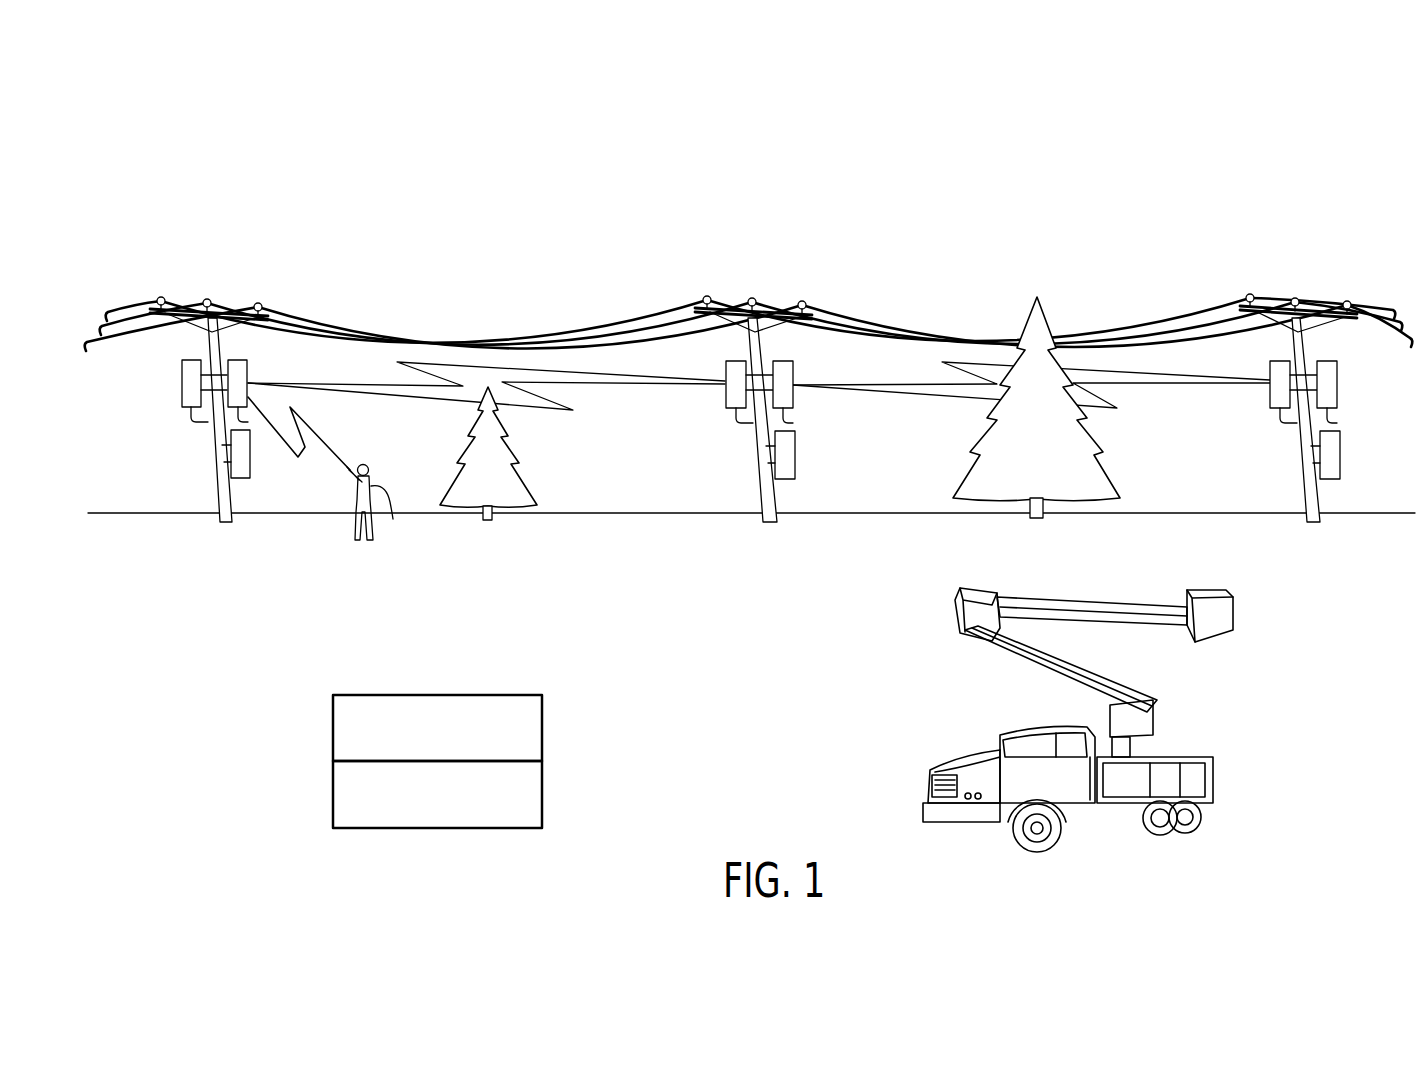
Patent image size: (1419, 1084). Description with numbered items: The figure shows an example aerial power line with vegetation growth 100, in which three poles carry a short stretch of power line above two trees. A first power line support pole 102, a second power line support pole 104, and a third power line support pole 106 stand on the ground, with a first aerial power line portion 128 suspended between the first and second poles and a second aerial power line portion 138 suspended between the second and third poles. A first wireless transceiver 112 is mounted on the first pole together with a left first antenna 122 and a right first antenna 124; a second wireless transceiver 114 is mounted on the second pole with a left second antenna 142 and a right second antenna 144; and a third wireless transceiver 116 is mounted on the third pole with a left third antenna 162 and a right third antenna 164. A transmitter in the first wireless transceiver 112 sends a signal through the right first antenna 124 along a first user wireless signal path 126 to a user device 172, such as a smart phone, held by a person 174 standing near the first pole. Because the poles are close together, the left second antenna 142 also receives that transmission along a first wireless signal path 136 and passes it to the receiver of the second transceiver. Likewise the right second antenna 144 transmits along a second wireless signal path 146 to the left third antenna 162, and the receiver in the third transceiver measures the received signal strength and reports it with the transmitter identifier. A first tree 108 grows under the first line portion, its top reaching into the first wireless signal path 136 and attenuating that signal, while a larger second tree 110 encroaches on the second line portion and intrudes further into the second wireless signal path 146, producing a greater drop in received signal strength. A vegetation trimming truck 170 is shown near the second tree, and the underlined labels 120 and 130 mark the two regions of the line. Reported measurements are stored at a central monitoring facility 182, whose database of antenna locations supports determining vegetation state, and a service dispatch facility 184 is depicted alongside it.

The aerial power line with vegetation growth 100 is at (1308, 190).
The first power line support pole 102 is at (212, 433).
The second power line support pole 104 is at (757, 433).
The third power line support pole 106 is at (1299, 433).
The first tree 108 is at (462, 443).
The second tree 110 is at (972, 446).
The first wireless transceiver 112 is at (228, 469).
The second wireless transceiver 114 is at (773, 469).
The third wireless transceiver 116 is at (1318, 469).
The line segment 120 is at (508, 565).
The left first antenna 122 is at (182, 396).
The right first antenna 124 is at (247, 373).
The first user wireless signal path 126 is at (300, 455).
The first aerial power line portion 128 is at (355, 333).
The line segment 130 is at (1053, 565).
The first wireless signal path 136 is at (577, 370).
The second aerial power line portion 138 is at (902, 331).
The left second antenna 142 is at (726, 396).
The right second antenna 144 is at (793, 373).
The second wireless signal path 146 is at (1120, 371).
The left third antenna 162 is at (1269, 396).
The right third antenna 164 is at (1337, 385).
The vegetation trimming truck 170 is at (976, 766).
The user device 172 is at (362, 463).
The person 174 is at (395, 521).
The central monitoring facility 182 is at (333, 732).
The service dispatch facility 184 is at (333, 798).